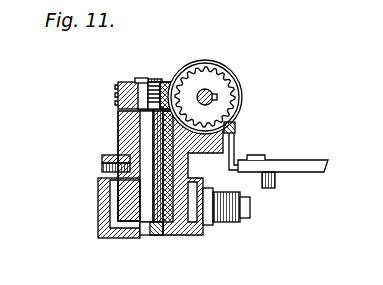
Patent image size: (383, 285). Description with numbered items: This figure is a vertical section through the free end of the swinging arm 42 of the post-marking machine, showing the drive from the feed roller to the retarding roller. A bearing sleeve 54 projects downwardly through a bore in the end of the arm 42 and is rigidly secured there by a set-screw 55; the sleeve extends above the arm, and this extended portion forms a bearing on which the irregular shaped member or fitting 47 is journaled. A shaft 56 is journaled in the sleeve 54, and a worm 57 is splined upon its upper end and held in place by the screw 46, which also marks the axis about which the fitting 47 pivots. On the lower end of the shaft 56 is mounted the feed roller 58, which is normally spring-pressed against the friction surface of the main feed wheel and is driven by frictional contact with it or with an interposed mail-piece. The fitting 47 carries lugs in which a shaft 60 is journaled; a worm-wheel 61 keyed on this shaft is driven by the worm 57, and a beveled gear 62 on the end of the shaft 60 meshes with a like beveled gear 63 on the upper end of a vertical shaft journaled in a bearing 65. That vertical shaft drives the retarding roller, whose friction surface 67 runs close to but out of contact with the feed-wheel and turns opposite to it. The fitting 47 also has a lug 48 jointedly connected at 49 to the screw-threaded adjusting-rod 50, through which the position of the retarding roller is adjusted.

The swinging arm 42 is at (120, 191).
The screw 46 is at (144, 77).
The irregular shaped member or fitting 47 is at (118, 118).
The lug 48 is at (276, 182).
The joint connection 49 is at (262, 157).
The screw-threaded adjusting-rod 50 is at (314, 160).
The bearing sleeve 54 is at (118, 138).
The set-screw 55 is at (100, 165).
The shaft 56 is at (150, 215).
The worm 57 is at (125, 82).
The feed roller 58 is at (98, 218).
The shaft 60 is at (218, 85).
The worm-wheel 61 is at (207, 88).
The beveled gear 62 is at (219, 76).
The beveled gear 63 is at (233, 123).
The bearing 65 is at (224, 164).
The friction surface 67 is at (250, 211).